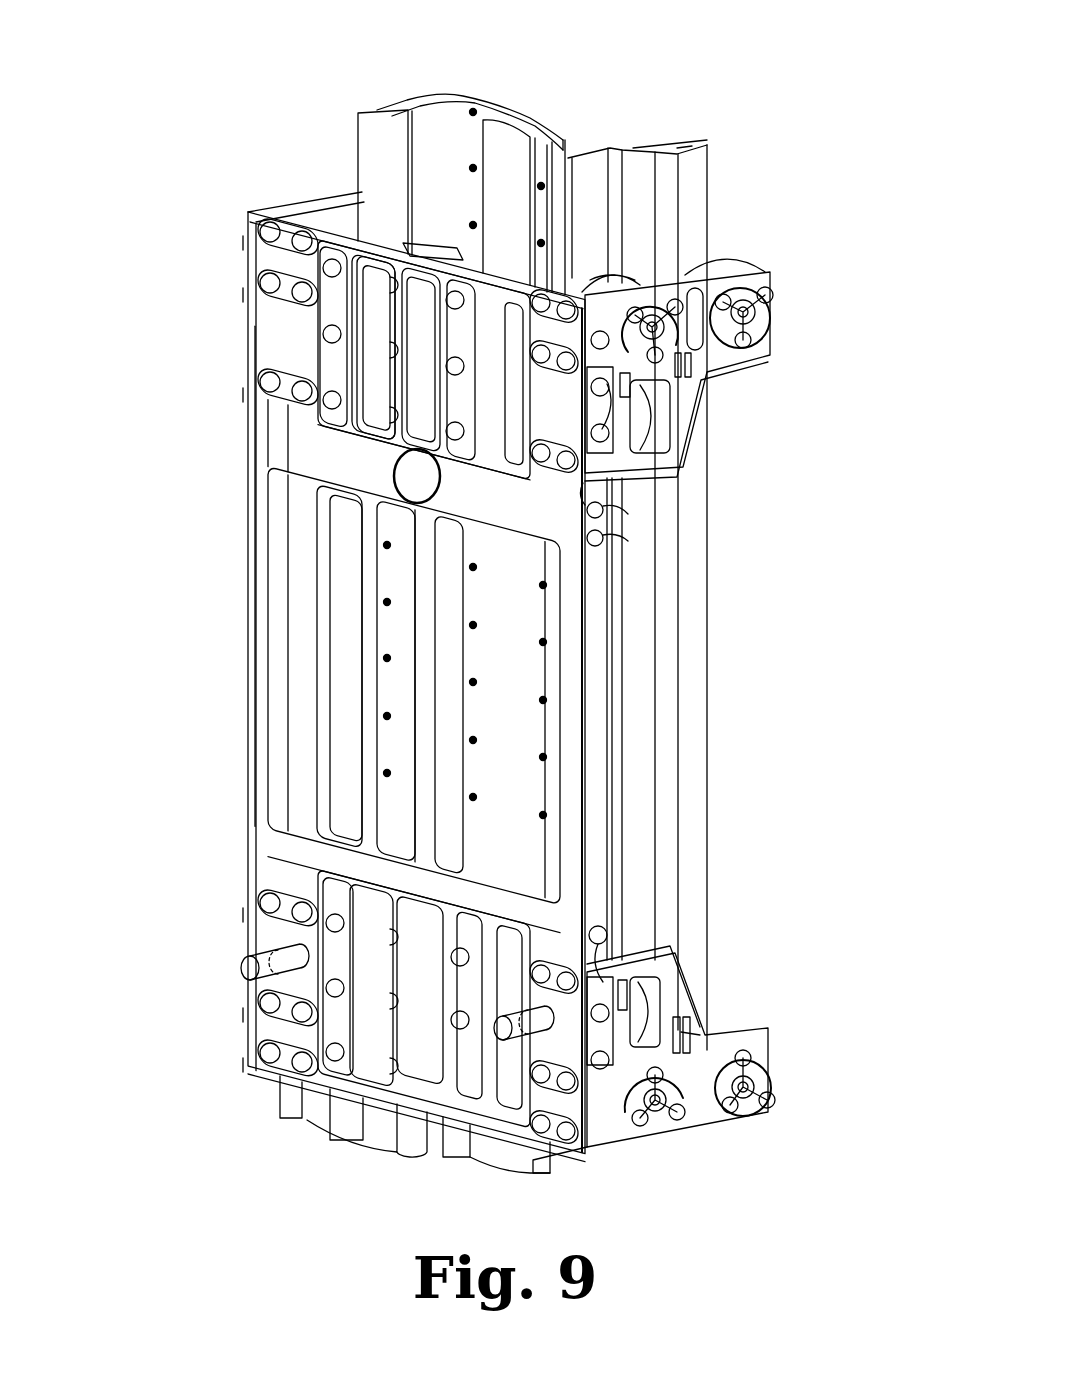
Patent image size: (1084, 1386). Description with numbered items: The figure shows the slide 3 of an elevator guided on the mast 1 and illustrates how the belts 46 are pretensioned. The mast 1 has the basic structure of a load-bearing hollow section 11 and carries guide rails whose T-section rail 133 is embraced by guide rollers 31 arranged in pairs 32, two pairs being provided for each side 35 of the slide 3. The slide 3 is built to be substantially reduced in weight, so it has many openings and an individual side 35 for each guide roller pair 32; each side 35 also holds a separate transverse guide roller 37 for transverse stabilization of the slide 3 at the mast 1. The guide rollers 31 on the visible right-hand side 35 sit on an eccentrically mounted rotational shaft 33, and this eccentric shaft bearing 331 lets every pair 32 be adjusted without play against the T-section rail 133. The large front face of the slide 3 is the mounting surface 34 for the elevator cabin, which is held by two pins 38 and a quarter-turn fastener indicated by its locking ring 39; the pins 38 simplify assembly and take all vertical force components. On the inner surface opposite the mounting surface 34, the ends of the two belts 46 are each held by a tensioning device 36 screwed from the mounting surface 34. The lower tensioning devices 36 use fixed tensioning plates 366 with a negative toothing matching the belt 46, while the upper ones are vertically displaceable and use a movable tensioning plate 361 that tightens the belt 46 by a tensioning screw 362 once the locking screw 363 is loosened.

The mast 1 is at (452, 137).
The slide 3 is at (272, 212).
The load-bearing hollow section 11 is at (678, 147).
The guide rollers 31 is at (715, 310).
The guide roller pair 32 is at (607, 282).
The eccentrically mounted rotational shaft 33 is at (637, 317).
The mounting surface 34 is at (305, 840).
The side of the slide 35 is at (650, 468).
The tensioning device 36 is at (460, 337).
The transverse guide roller 37 is at (645, 413).
The pins 38 is at (515, 1020).
The locking ring 39 is at (393, 458).
The belts 46 is at (512, 220).
The T-section rail 133 is at (668, 197).
The eccentric shaft bearing 331 is at (765, 318).
The movable tensioning plate 361 is at (370, 390).
The tensioning screw 362 is at (493, 537).
The locking screw 363 is at (490, 263).
The fixed tensioning plate 366 is at (373, 908).